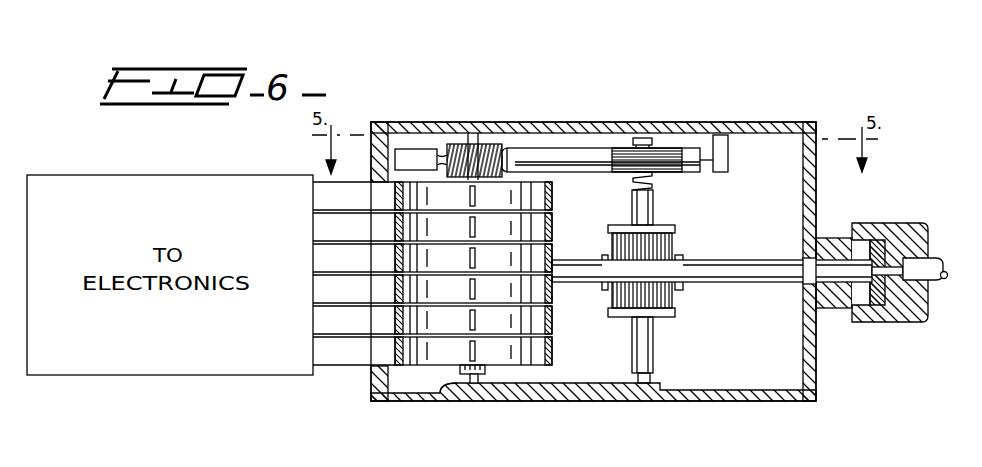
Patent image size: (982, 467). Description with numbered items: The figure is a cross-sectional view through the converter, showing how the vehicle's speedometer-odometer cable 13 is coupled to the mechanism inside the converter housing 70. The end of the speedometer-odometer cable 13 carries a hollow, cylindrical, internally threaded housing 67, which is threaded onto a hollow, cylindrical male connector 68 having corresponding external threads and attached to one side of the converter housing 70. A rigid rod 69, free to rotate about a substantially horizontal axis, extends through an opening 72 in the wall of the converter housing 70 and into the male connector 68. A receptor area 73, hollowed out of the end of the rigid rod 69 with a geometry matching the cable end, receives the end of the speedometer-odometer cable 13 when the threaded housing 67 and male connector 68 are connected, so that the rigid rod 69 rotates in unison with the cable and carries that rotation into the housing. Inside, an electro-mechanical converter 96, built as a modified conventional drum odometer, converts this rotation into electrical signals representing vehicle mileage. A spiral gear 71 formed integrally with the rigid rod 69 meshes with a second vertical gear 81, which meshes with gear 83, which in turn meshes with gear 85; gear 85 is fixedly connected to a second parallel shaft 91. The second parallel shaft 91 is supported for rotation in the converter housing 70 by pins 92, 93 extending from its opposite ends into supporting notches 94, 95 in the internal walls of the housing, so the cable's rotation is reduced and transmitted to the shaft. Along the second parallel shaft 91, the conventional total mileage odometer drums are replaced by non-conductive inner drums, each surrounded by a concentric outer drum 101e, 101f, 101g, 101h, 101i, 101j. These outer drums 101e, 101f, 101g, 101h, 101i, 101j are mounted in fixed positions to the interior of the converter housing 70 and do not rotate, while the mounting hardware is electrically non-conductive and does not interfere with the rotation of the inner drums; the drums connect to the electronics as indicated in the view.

The speedometer-odometer cable 13 is at (933, 258).
The internally threaded housing 67 is at (903, 228).
The male connector 68 is at (832, 238).
The rigid rod 69 is at (737, 260).
The converter housing 70 is at (645, 112).
The spiral gear 71 is at (673, 256).
The opening 72 is at (807, 286).
The receptor area 73 is at (882, 282).
The second vertical gear 81 is at (677, 298).
The gear 83 is at (676, 172).
The gear 85 is at (495, 146).
The second parallel shaft 91 is at (486, 373).
The pin 92 is at (422, 122).
The pin 93 is at (457, 383).
The supporting notch 94 is at (478, 132).
The supporting notch 95 is at (472, 391).
The electro-mechanical converter 96 is at (560, 296).
The outer drum 101e is at (395, 195).
The outer drum 101f is at (395, 226).
The outer drum 101g is at (395, 257).
The outer drum 101h is at (395, 288).
The outer drum 101i is at (395, 319).
The outer drum 101j is at (395, 350).